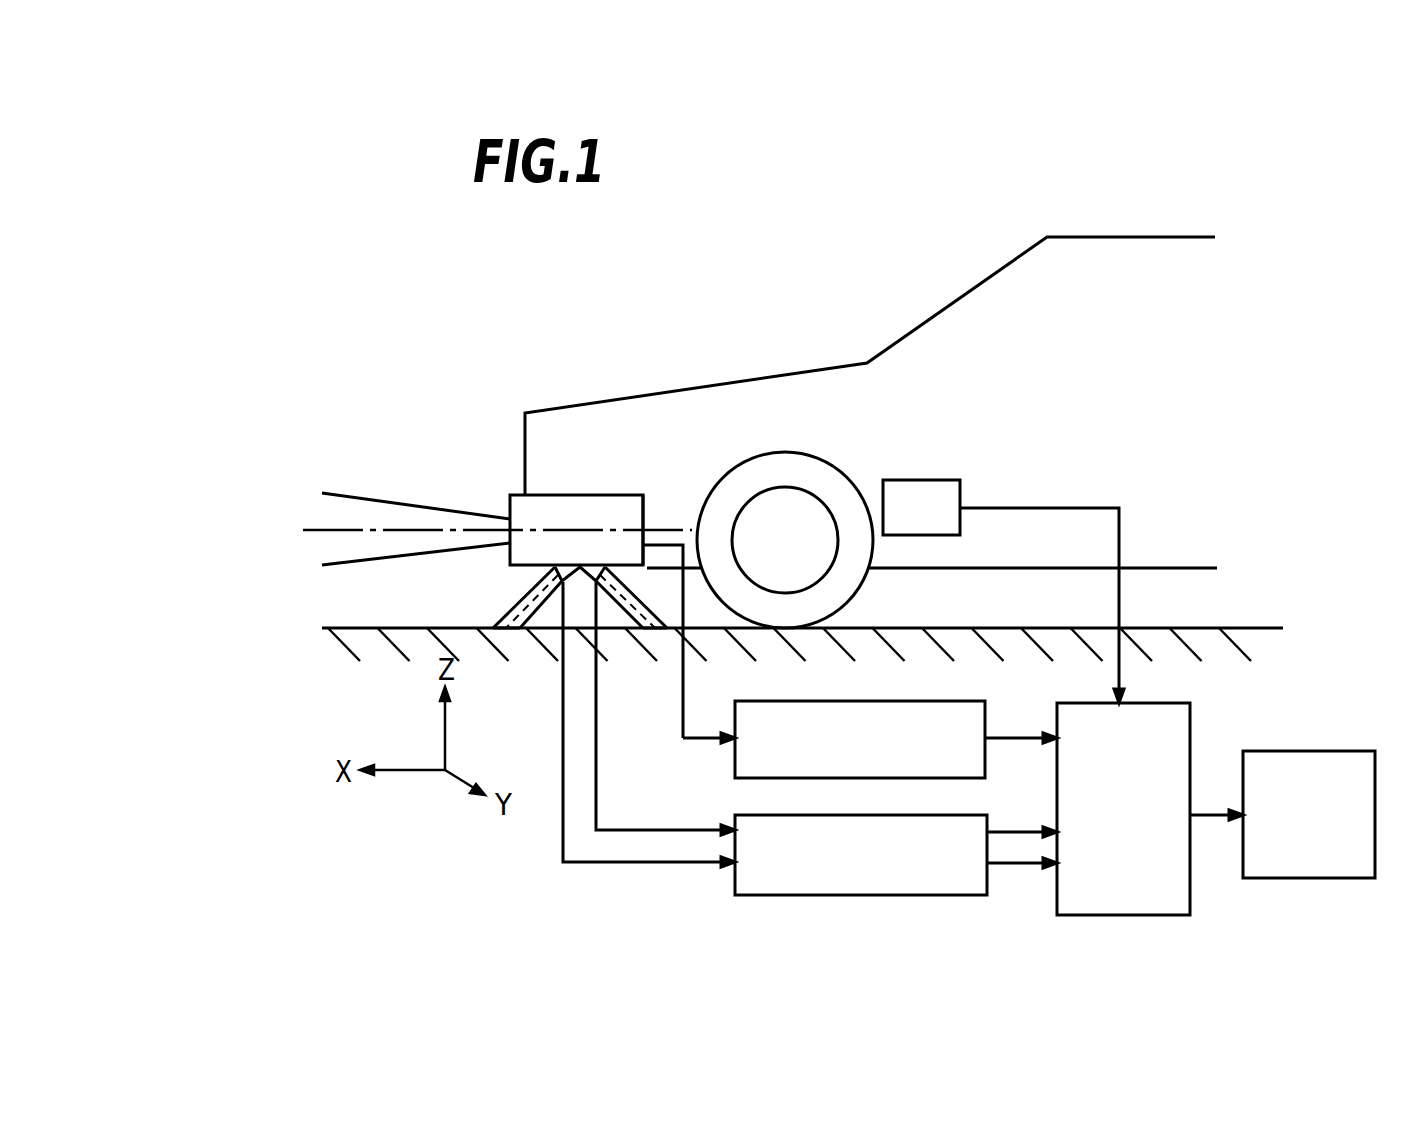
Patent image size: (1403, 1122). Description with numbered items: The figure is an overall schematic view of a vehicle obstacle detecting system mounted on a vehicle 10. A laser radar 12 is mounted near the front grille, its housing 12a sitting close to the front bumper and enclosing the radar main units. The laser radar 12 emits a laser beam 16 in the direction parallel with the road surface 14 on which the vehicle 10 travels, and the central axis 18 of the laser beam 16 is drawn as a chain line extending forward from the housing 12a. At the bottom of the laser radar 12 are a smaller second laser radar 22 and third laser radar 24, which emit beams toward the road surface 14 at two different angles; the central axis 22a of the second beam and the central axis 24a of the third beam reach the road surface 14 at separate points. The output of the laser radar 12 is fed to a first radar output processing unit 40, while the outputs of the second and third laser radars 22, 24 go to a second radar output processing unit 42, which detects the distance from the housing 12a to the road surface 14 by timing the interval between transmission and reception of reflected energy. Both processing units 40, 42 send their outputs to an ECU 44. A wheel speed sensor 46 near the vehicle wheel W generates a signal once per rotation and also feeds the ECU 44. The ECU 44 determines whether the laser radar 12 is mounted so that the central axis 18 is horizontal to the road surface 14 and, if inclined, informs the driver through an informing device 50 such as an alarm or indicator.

The vehicle 10 is at (1085, 357).
The laser radar 12 is at (573, 492).
The housing 12a is at (647, 494).
The road surface 14 is at (1257, 629).
The laser beam 16 is at (350, 497).
The central axis of the laser beam 18 is at (303, 530).
The second laser radar 22 is at (537, 572).
The central axis of the second laser radar beam 22a is at (525, 628).
The third laser radar 24 is at (607, 570).
The central axis of the third laser radar beam 24a is at (647, 628).
The vehicle wheel W is at (833, 476).
The first radar output processing unit 40 is at (856, 678).
The second radar output processing unit 42 is at (880, 895).
The electronic control unit 44 is at (1167, 915).
The wheel speed sensor 46 is at (935, 524).
The informing device 50 is at (1338, 751).